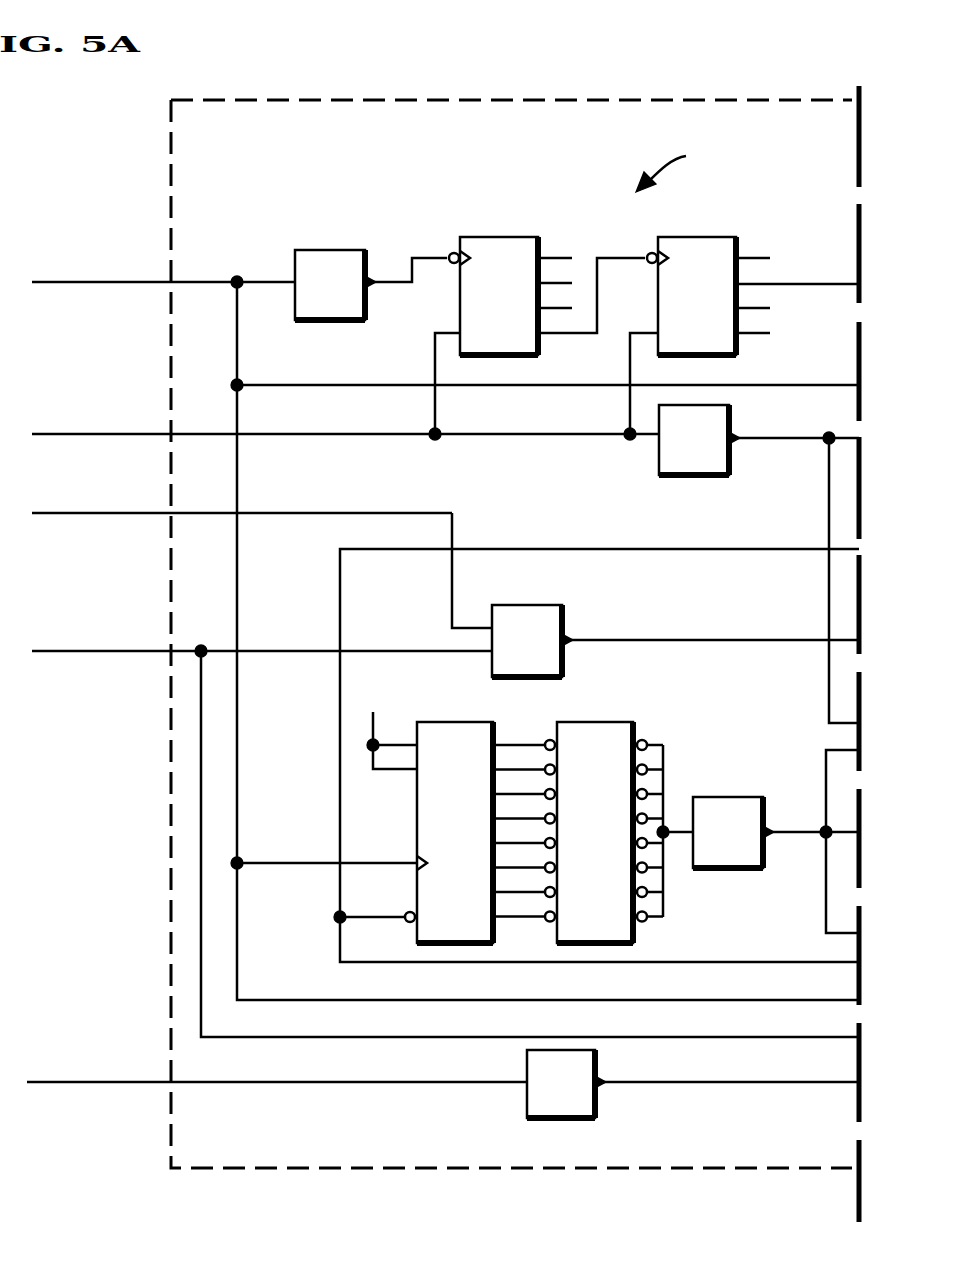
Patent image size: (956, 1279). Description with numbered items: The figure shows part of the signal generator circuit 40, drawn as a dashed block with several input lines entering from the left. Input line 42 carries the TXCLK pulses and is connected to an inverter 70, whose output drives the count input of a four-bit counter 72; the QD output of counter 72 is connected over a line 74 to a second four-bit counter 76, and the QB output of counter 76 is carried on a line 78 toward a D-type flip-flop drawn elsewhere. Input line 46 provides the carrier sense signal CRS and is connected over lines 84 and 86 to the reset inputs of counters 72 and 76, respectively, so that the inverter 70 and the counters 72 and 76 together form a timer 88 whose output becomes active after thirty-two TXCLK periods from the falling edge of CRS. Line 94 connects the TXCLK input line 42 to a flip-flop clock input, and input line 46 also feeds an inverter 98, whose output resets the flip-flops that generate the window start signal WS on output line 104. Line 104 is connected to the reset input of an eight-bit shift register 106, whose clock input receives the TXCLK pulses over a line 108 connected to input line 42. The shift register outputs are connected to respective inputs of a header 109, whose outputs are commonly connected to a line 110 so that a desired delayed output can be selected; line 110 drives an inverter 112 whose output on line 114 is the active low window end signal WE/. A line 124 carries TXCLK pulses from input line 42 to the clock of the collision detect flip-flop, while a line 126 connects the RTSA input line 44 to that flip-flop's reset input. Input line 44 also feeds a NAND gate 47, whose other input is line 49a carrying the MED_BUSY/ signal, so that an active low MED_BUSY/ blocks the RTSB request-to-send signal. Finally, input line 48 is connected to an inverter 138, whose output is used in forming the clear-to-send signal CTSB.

The signal generator circuit 40 is at (582, 100).
The input line 42 is at (113, 281).
The input line 46 is at (113, 433).
The input line 49a is at (113, 515).
The input line 44 is at (113, 653).
The input line 48 is at (113, 1083).
The inverter 70 is at (340, 250).
The 4-bit counter 72 is at (510, 237).
The line 74 is at (597, 258).
The 4-bit counter 76 is at (724, 238).
The line 78 is at (780, 284).
The line 84 is at (435, 334).
The line 86 is at (630, 346).
The timer 88 is at (676, 164).
The line 94 is at (780, 385).
The inverter 98 is at (731, 458).
The output line 104 is at (716, 549).
The NAND gate 47 is at (542, 605).
The 8-bit shift register 106 is at (474, 722).
The header 109 is at (626, 722).
The line 110 is at (677, 832).
The inverter 112 is at (720, 797).
The line 114 is at (792, 834).
The line 108 is at (300, 862).
The line 124 is at (740, 1000).
The line 126 is at (740, 1037).
The inverter 138 is at (596, 1103).